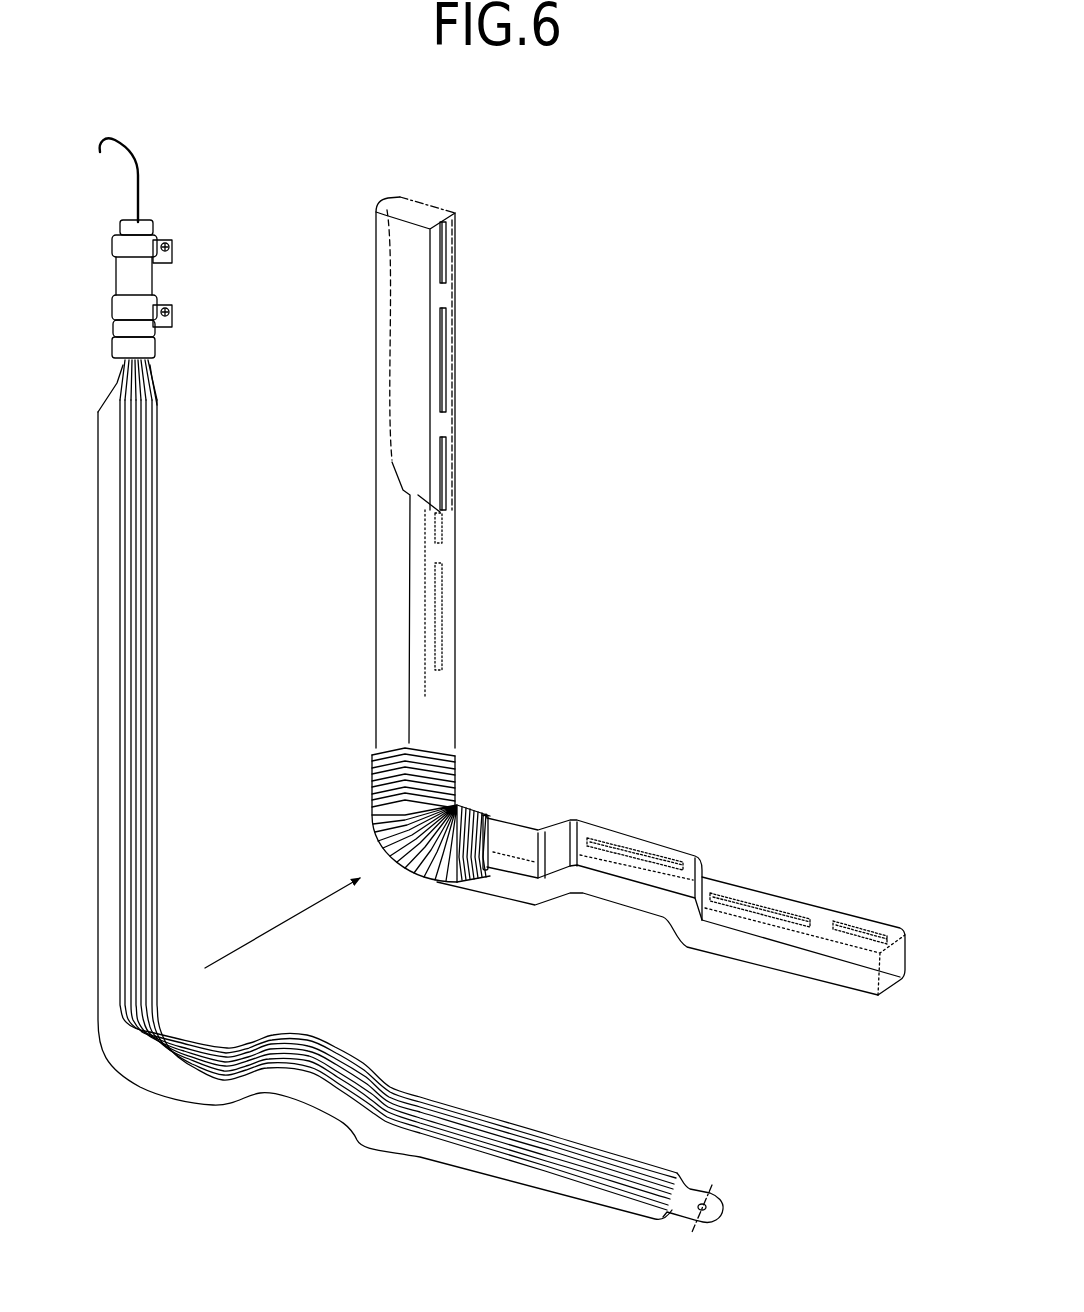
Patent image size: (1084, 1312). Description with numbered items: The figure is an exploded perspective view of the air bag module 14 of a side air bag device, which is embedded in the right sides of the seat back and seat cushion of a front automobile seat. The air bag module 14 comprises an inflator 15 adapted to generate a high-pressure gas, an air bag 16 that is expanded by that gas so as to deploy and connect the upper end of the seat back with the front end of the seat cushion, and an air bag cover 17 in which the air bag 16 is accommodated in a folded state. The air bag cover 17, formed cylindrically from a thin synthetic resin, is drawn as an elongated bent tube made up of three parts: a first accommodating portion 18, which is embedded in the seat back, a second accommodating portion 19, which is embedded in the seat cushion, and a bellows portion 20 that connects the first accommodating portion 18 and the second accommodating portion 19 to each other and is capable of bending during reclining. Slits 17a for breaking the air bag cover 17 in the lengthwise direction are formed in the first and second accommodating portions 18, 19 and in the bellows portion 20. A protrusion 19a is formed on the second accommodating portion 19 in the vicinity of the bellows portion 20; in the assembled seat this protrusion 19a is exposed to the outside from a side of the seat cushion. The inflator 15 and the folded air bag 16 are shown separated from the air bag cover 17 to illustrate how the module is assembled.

The air bag module 14 is at (290, 173).
The inflator 15 is at (147, 275).
The air bag 16 is at (147, 588).
The air bag cover 17 is at (505, 623).
The slits 17a is at (442, 460).
The first accommodating portion 18 is at (383, 617).
The second accommodating portion 19 is at (622, 897).
The protrusion 19a is at (622, 838).
The bellows portion 20 is at (377, 830).